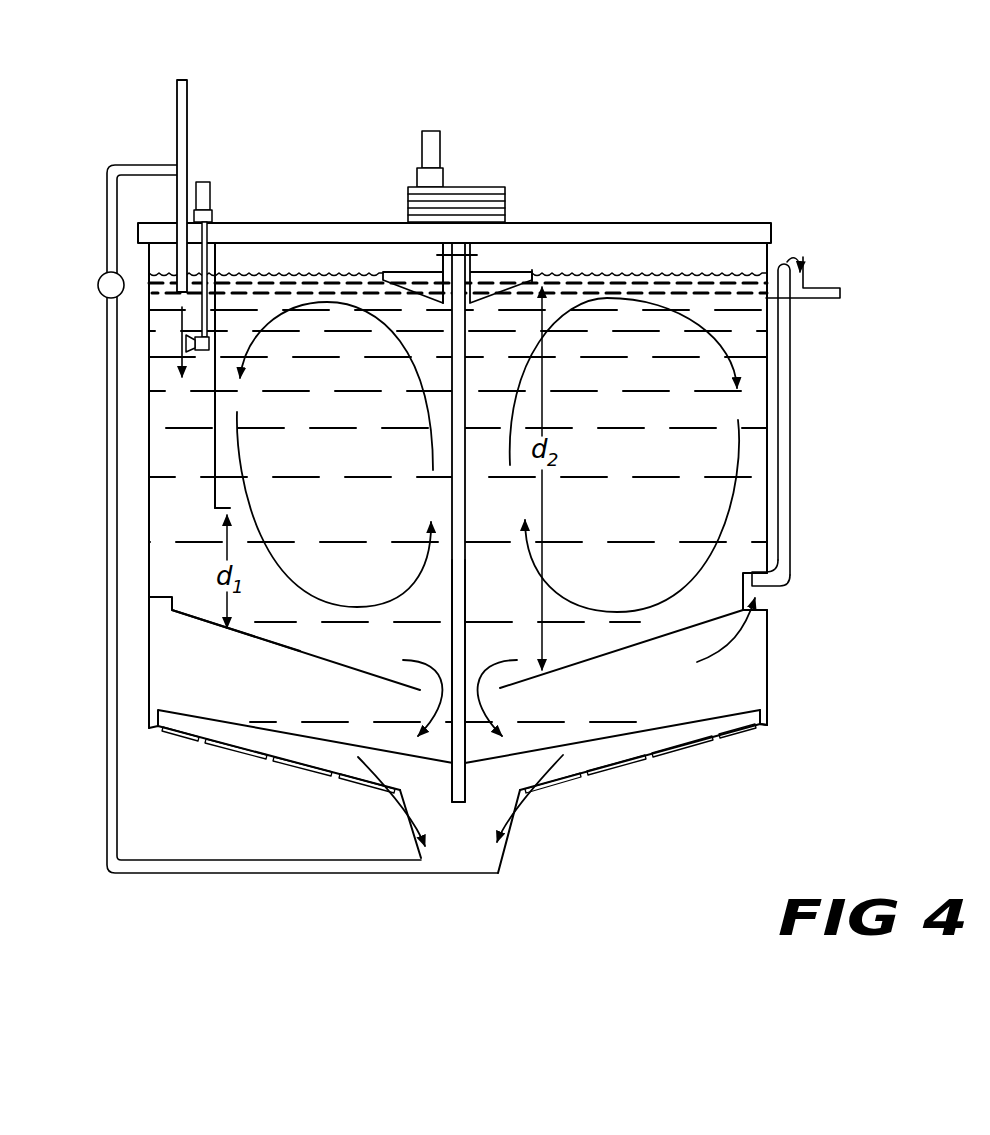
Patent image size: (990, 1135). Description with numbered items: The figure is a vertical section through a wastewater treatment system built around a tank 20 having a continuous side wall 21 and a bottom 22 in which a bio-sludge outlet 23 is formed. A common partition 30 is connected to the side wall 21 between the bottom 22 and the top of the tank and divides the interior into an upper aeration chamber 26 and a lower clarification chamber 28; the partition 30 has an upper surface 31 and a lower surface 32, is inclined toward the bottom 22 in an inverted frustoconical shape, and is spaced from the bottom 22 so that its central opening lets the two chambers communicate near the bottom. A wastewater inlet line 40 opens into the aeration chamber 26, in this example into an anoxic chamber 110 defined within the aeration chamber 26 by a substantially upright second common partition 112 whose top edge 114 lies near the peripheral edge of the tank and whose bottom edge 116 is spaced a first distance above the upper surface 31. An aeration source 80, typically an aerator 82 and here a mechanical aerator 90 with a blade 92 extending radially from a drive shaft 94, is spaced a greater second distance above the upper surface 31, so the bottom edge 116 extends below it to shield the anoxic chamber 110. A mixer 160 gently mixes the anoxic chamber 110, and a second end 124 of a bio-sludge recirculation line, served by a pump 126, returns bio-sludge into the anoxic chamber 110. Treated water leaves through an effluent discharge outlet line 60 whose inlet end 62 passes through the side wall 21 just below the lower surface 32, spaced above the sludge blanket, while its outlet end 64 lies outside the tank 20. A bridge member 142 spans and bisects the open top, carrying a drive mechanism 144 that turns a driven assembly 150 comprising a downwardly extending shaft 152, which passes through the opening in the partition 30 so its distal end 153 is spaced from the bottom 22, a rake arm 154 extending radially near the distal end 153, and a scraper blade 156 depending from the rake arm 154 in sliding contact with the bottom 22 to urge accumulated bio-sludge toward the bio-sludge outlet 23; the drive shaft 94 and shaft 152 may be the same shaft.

The tank 20 is at (767, 727).
The side wall 21 is at (767, 650).
The bottom 22 is at (673, 757).
The bio-sludge outlet 23 is at (505, 810).
The upper aeration chamber 26 is at (690, 526).
The lower clarification chamber 28 is at (615, 703).
The common partition 30 is at (650, 640).
The upper surface 31 is at (318, 658).
The lower surface 32 is at (270, 645).
The wastewater inlet line 40 is at (188, 90).
The effluent discharge outlet line 60 is at (790, 490).
The inlet end 62 is at (755, 592).
The outlet end 64 is at (801, 260).
The aeration source 80 is at (486, 272).
The aerator 82 is at (524, 272).
The mechanical aerator 90 is at (388, 272).
The blade 92 is at (563, 272).
The drive shaft 94 is at (440, 272).
The anoxic chamber 110 is at (167, 418).
The second common partition 112 is at (214, 455).
The top edge 114 is at (215, 260).
The bottom edge 116 is at (215, 508).
The second end 124 is at (176, 160).
The pump 126 is at (98, 290).
The bridge member 142 is at (748, 187).
The drive mechanism 144 is at (463, 187).
The driven assembly 150 is at (466, 503).
The shaft 152 is at (466, 592).
The distal end 153 is at (462, 805).
The rake arm 154 is at (270, 735).
The scraper blade 156 is at (307, 767).
The mixer 160 is at (203, 182).